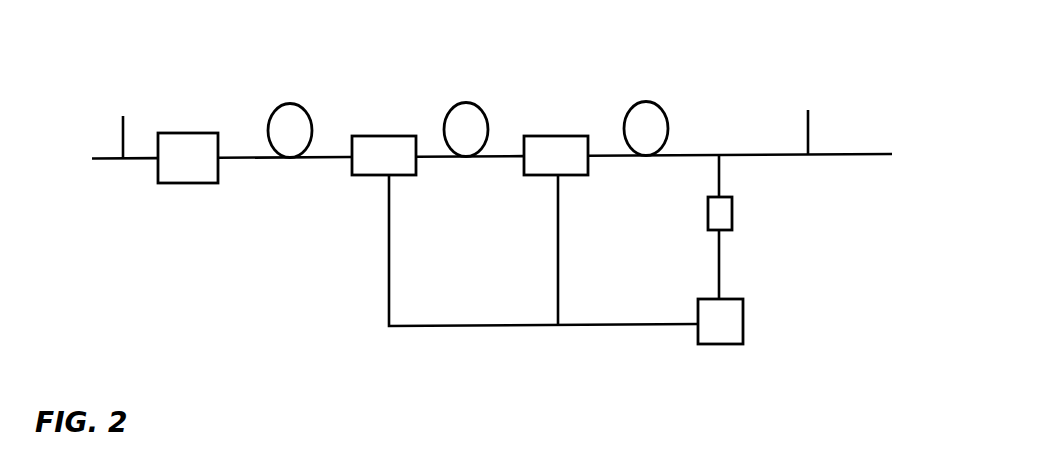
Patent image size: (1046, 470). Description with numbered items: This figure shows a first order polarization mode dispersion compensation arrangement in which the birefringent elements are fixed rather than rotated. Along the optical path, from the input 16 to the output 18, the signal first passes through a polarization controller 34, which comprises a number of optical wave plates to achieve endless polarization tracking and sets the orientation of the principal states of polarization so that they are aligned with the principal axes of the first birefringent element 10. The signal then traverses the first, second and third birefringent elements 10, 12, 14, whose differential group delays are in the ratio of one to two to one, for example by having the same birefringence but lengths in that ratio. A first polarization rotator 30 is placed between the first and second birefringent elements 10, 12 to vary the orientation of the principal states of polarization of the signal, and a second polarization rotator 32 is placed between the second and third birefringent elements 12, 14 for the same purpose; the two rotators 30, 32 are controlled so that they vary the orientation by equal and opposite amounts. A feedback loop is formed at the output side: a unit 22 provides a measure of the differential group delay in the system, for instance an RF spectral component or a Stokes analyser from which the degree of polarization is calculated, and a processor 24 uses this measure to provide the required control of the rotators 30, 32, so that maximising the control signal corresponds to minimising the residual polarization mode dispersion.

The first birefringent element 10 is at (290, 104).
The second birefringent element 12 is at (466, 102).
The third birefringent element 14 is at (646, 102).
The input 16 is at (115, 119).
The output 18 is at (805, 115).
The unit 22 is at (732, 213).
The processor 24 is at (743, 314).
The first polarization rotator 30 is at (365, 175).
The second polarization rotator 32 is at (530, 175).
The polarization controller 34 is at (186, 133).